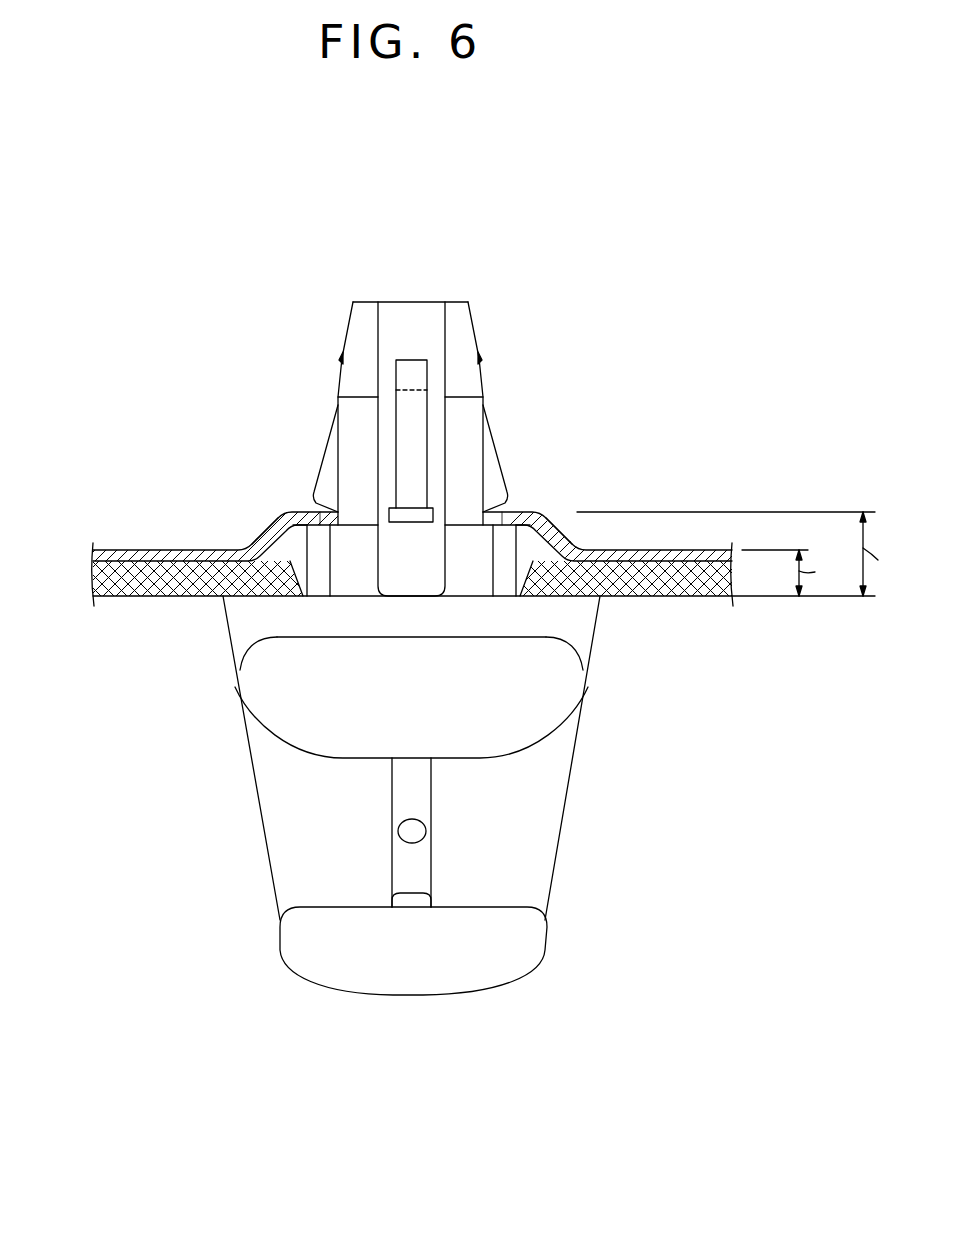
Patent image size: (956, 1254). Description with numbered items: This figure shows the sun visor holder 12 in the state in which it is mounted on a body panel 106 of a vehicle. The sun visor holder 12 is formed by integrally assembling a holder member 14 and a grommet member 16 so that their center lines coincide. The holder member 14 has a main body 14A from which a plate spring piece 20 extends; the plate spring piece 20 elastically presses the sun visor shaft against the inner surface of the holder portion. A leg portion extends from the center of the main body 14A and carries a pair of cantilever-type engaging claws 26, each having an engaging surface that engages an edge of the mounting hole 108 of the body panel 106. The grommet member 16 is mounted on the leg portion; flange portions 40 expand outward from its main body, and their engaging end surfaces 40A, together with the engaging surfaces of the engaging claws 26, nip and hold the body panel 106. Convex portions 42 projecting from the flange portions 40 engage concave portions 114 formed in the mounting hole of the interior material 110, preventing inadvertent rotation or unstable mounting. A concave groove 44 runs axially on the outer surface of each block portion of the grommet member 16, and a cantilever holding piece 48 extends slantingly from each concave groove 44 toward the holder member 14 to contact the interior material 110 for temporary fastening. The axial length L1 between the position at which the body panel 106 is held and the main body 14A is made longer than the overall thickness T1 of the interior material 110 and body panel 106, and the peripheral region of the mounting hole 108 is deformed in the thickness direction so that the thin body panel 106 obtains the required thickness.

The sun visor holder 12 is at (600, 190).
The grommet member 16 is at (456, 265).
The concave groove 44 is at (408, 328).
The holding piece 48 is at (410, 443).
The engaging claw 26 is at (325, 455).
The flange portion 40 is at (357, 575).
The engaging end surface 40A is at (320, 513).
The convex portion 42 is at (300, 540).
The mounting hole 108 is at (488, 514).
The concave portion 114 is at (250, 550).
The body panel 106 is at (150, 550).
The interior material 110 is at (117, 585).
The holder member 14 is at (600, 676).
The main body 14A is at (583, 630).
The plate spring piece 20 is at (533, 725).